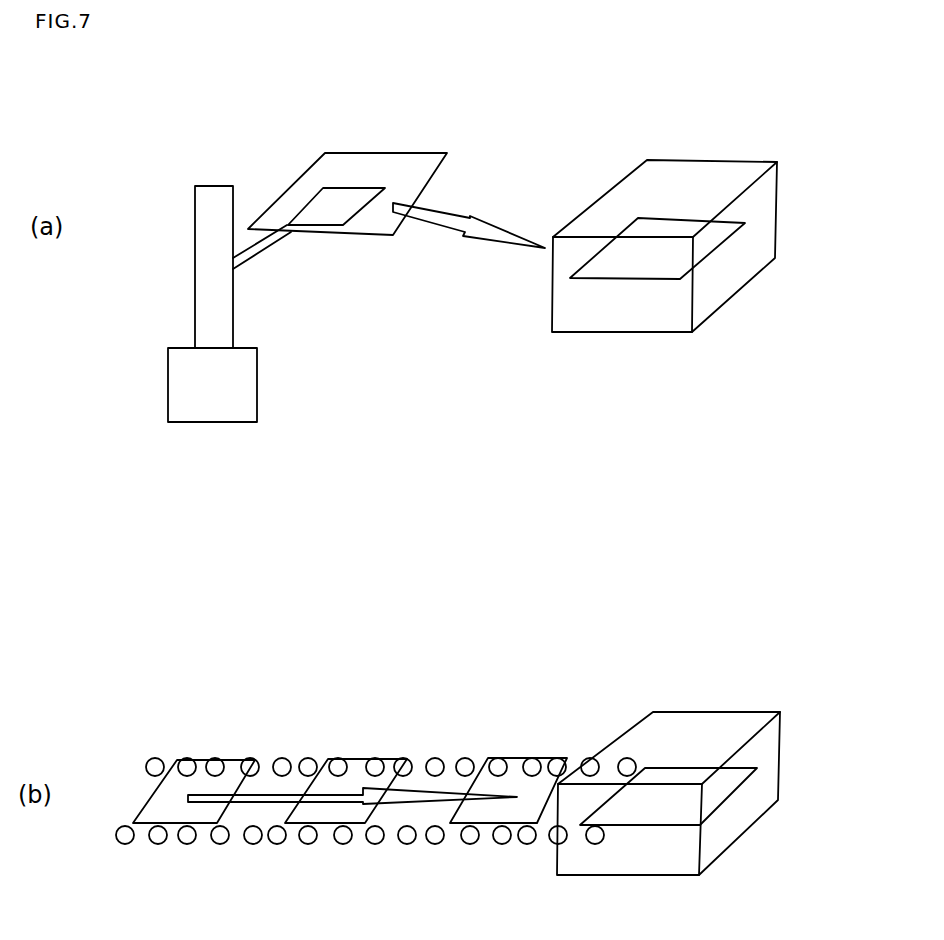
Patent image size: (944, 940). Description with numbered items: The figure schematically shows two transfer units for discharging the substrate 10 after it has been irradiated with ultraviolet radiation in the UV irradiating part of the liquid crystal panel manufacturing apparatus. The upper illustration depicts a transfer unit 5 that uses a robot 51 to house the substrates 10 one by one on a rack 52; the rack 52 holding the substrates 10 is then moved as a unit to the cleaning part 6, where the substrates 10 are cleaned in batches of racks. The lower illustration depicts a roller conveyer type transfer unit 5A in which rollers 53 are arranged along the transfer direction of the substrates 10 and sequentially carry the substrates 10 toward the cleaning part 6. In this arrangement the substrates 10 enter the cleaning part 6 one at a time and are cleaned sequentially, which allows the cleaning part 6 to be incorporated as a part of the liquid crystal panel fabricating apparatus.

The transfer unit 5 is at (307, 257).
The robot 51 is at (257, 362).
The rack 52 is at (352, 152).
The substrate 10 is at (367, 195).
The cleaning part 6 is at (777, 195).
The roller conveyer type transfer unit 5A is at (376, 767).
The roller 53 is at (224, 842).